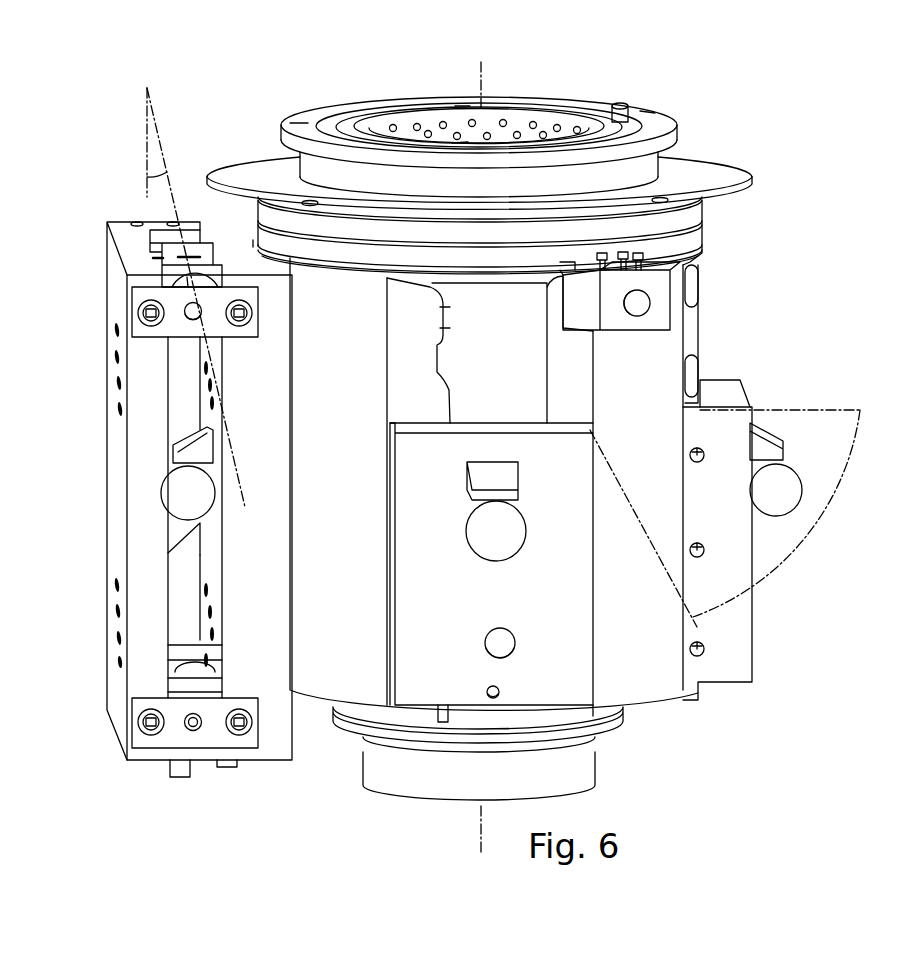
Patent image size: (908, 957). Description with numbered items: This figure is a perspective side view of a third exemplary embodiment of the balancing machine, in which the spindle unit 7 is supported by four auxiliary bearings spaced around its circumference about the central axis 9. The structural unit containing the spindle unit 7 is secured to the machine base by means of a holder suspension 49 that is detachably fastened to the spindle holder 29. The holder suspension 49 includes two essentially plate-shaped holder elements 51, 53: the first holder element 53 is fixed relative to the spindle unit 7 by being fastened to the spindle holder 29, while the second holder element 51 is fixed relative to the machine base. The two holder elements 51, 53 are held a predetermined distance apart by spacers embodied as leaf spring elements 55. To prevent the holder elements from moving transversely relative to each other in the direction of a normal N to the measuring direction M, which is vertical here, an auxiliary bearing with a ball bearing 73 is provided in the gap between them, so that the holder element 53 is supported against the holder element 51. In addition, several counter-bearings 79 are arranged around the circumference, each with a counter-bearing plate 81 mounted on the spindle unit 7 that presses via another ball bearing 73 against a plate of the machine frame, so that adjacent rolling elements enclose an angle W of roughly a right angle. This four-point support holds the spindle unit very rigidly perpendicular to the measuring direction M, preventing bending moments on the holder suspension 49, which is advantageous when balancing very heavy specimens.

The spindle unit 7 is at (727, 330).
The central axis 9 is at (485, 78).
The spindle holder 29 is at (320, 673).
The holder suspension 49 is at (155, 524).
The second holder element 51 is at (143, 564).
The first holder element 53 is at (272, 745).
The leaf spring elements 55 is at (140, 296).
The ball bearing 73 is at (187, 486).
The counter-bearing 79 is at (765, 372).
The counter-bearing plate 81 is at (733, 637).
The angle W is at (797, 547).
The measuring direction M is at (163, 148).
The normal N is at (147, 172).